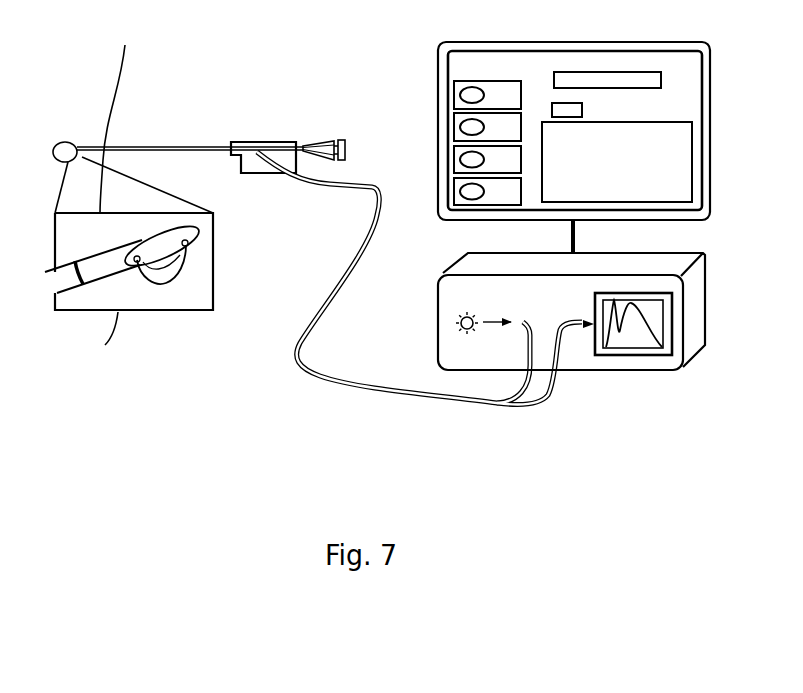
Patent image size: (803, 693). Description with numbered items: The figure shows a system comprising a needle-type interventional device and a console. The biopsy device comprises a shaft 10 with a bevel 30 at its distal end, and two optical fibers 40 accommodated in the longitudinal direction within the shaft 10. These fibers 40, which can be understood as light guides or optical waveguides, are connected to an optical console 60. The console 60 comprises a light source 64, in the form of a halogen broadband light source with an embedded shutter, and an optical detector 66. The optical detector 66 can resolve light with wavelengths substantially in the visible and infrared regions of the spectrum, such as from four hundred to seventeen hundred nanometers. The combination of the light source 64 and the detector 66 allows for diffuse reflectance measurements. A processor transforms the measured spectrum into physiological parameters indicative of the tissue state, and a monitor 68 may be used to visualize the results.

The shaft 10 is at (108, 267).
The bevel 30 is at (162, 247).
The optical fibers 40 is at (327, 292).
The optical console 60 is at (455, 238).
The light source 64 is at (458, 324).
The optical detector 66 is at (638, 355).
The monitor 68 is at (438, 137).